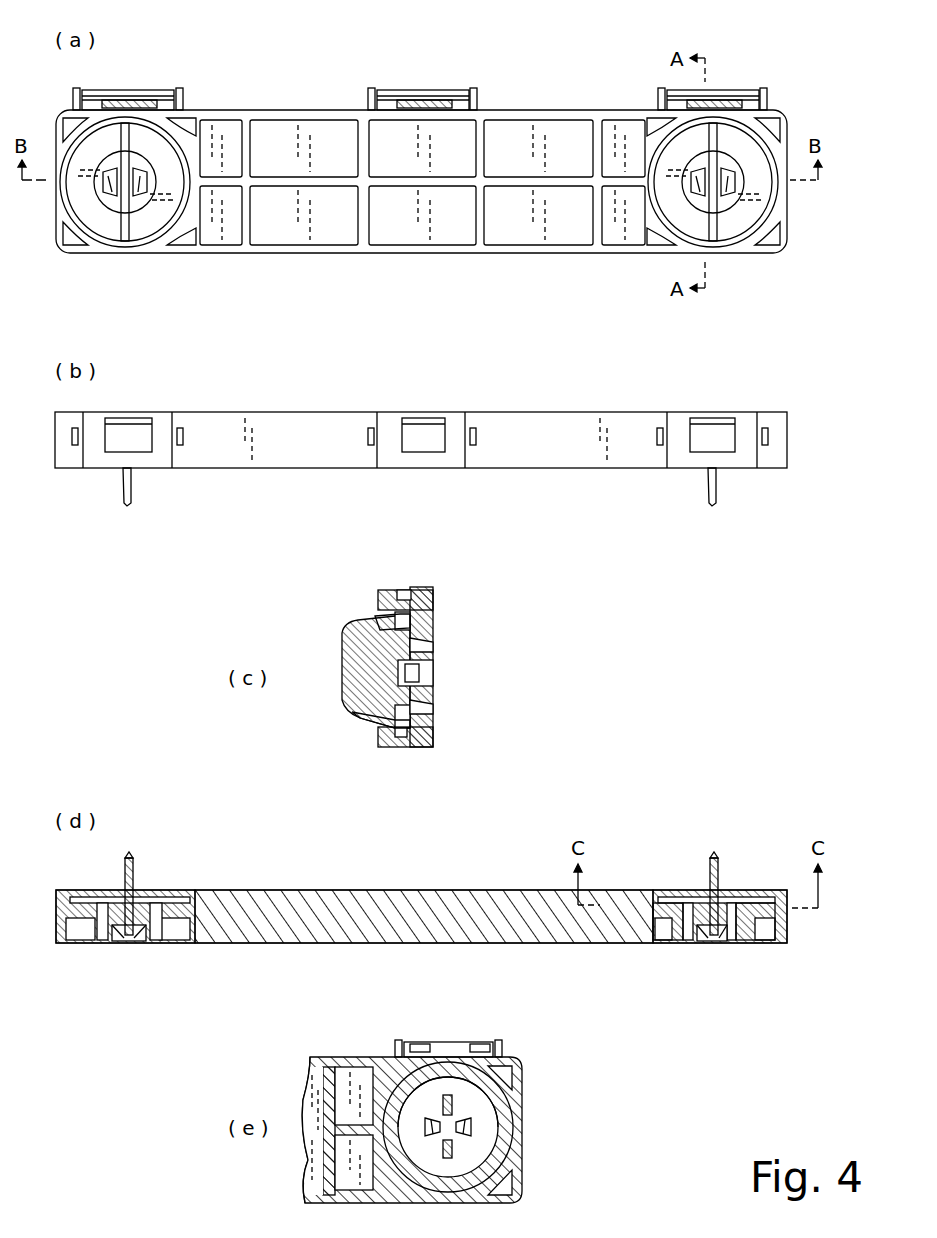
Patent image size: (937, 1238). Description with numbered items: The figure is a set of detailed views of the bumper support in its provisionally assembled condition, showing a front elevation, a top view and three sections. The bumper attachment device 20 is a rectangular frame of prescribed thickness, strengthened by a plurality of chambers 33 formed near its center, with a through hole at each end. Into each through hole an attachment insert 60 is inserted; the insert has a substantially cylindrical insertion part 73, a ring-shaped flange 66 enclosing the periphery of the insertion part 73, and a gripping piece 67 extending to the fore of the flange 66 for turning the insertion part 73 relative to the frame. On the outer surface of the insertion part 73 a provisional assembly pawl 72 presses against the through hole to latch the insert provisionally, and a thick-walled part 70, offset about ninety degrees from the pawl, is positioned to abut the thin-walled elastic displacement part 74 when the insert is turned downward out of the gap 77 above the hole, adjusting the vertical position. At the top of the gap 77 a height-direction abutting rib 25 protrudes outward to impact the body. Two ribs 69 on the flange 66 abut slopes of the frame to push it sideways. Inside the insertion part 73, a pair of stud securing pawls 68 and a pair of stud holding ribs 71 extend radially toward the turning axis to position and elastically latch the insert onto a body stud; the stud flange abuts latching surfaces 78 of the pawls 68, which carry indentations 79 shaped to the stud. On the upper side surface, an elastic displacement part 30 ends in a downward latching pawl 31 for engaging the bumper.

The bumper attachment device 20 is at (252, 108).
The height-direction abutting rib 25 is at (476, 105).
The elastic displacement part 30 is at (385, 95).
The latching pawl 31 is at (428, 98).
The chambers 33 is at (342, 225).
The attachment insert 60 is at (745, 148).
The ring-shaped flange 66 is at (672, 160).
The gripping piece 67 is at (730, 150).
The stud securing pawls 68 is at (683, 195).
The ribs 69 is at (412, 622).
The vehicle height-direction adjustment abutting piece 70 is at (668, 930).
The stud holding ribs 71 is at (430, 652).
The provisional assembly pawl 72 is at (400, 628).
The insertion part 73 is at (758, 930).
The vehicle up-down direction adjusting elastic piece 74 is at (465, 1068).
The gap 77 is at (440, 1065).
The latching surfaces 78 is at (405, 1145).
The indentations 79 is at (495, 1118).